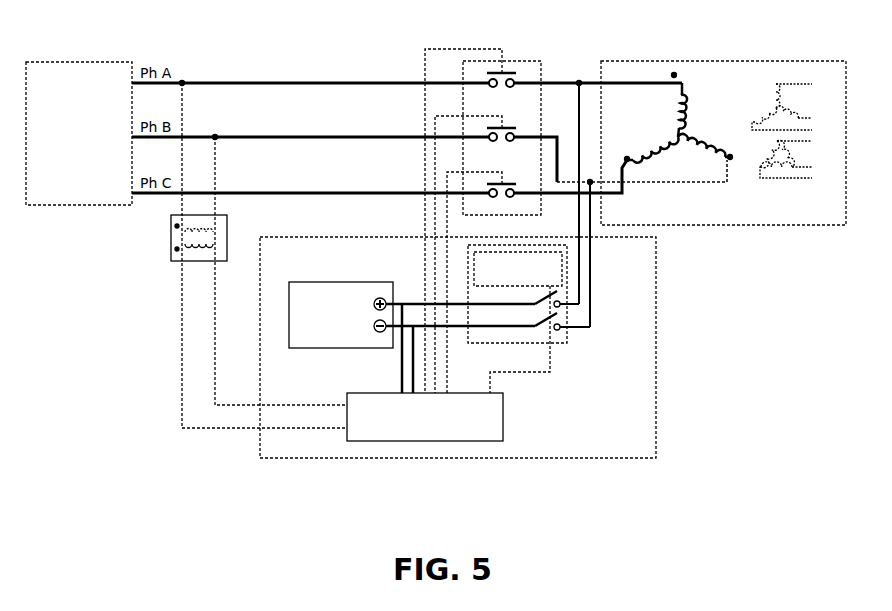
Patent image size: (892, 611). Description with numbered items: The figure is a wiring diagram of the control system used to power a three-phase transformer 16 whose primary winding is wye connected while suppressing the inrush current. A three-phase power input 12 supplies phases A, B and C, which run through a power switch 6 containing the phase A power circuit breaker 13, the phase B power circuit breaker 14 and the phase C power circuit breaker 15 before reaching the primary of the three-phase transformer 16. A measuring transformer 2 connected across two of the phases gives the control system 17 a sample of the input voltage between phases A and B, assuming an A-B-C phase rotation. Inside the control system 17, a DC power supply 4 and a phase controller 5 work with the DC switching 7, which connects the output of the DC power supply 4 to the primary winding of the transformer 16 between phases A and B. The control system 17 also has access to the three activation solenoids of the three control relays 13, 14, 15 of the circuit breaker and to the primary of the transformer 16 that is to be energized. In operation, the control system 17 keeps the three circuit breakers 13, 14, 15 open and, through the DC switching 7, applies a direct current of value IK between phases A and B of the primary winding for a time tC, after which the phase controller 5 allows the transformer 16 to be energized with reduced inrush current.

The three-phase power input 12 is at (80, 62).
The measuring transformer 2 is at (170, 238).
The control system for three-phase transformer 17 is at (315, 237).
The DC power supply 4 is at (289, 310).
The phase controller 5 is at (505, 408).
The power switch 6 is at (527, 61).
The phase A power circuit breaker 13 is at (470, 94).
The phase B power circuit breaker 14 is at (470, 149).
The phase C power circuit breaker 15 is at (470, 204).
The DC switching 7 is at (537, 252).
The three-phase transformer with primary winding wye connected 16 is at (795, 61).